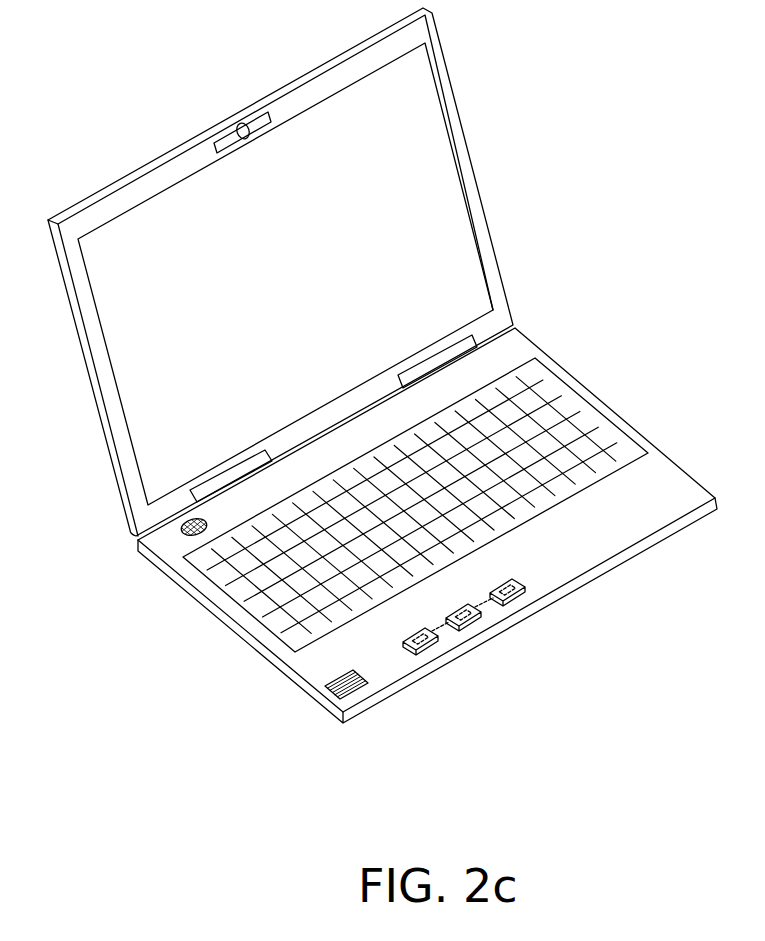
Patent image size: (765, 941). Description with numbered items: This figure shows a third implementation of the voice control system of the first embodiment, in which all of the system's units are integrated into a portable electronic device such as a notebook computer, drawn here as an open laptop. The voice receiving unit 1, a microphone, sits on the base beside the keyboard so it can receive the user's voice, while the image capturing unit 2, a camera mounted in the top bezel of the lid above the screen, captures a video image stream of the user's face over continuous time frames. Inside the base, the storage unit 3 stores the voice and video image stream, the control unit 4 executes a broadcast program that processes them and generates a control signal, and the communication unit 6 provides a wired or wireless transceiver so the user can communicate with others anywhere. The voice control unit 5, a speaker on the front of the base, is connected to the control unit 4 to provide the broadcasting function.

The voice receiving unit 1 is at (187, 531).
The image capturing unit 2 is at (245, 125).
The storage unit 3 is at (525, 600).
The control unit 4 is at (480, 627).
The voice control unit 5 is at (358, 688).
The communication unit 6 is at (432, 645).